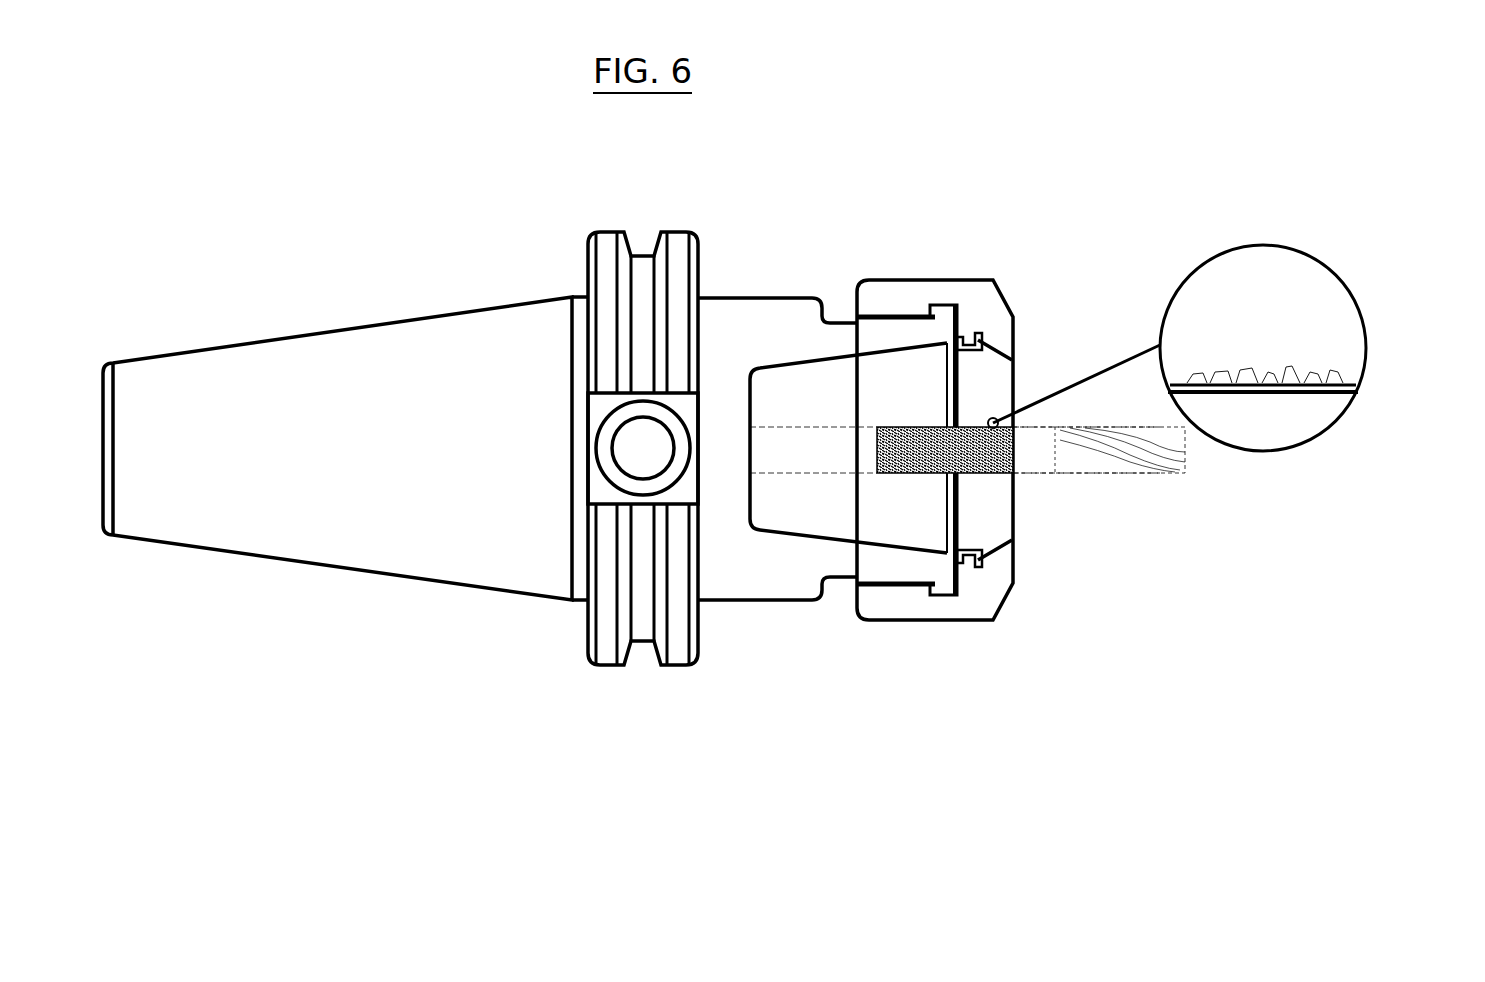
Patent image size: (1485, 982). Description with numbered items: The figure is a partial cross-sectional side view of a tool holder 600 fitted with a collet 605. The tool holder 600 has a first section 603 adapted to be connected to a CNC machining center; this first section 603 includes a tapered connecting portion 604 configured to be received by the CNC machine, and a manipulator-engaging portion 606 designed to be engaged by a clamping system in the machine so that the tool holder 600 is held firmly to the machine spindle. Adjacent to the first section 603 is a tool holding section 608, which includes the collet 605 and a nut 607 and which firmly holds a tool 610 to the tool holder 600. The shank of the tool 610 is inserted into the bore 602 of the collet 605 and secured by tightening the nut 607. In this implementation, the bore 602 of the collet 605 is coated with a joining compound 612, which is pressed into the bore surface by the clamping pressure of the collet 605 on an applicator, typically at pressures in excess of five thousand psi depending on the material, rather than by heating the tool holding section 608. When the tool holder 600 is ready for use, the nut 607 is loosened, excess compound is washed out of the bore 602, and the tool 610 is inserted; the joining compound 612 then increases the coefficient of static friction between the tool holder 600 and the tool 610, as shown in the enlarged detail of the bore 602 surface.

The tool holder 600 is at (744, 277).
The bore 602 is at (978, 473).
The first section 603 is at (400, 361).
The tapered connecting portion 604 is at (337, 422).
The collet 605 is at (782, 265).
The manipulator-engaging portion 606 is at (695, 678).
The nut 607 is at (983, 575).
The tool holding section 608 is at (945, 462).
The tool 610 is at (1122, 457).
The joining compound 612 is at (1338, 375).